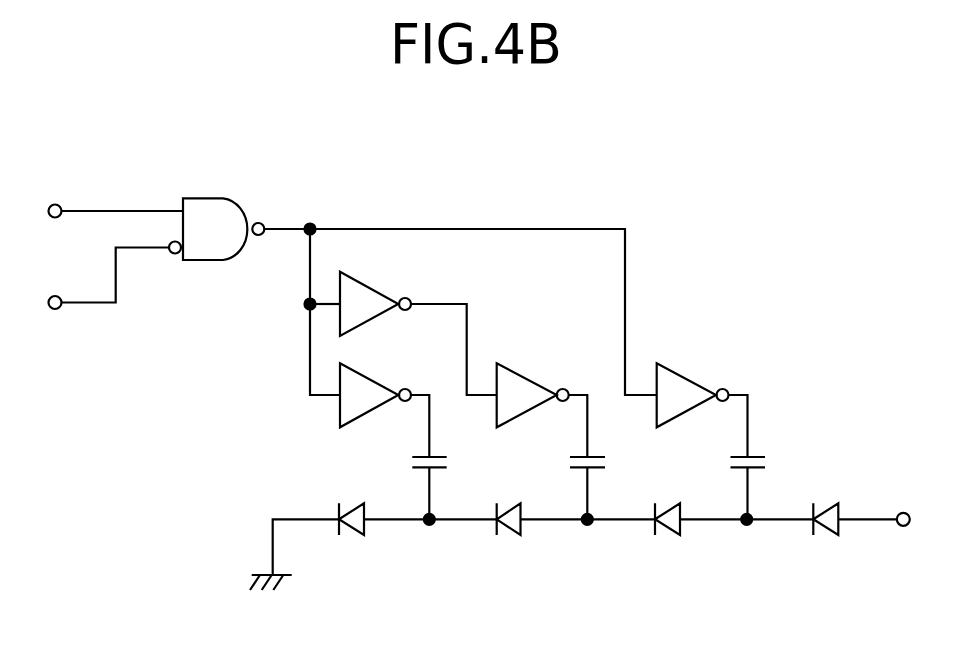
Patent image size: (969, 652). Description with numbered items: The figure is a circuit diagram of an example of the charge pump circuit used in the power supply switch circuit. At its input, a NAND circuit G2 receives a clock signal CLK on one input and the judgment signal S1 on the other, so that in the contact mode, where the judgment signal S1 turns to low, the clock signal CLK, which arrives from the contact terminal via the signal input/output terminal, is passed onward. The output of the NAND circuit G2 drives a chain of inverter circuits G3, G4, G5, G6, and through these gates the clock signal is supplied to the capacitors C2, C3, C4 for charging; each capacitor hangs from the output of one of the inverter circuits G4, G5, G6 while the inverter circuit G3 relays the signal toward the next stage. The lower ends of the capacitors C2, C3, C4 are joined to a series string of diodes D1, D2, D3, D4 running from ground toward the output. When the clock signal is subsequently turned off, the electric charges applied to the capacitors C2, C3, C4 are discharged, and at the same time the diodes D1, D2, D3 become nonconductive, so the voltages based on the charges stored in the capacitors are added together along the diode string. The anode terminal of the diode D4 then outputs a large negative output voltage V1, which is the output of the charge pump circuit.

The clock signal CLK is at (109, 195).
The judgment signal S1 is at (106, 295).
The NAND circuit G2 is at (216, 215).
The inverter circuit G3 is at (418, 322).
The inverter circuit G4 is at (384, 410).
The inverter circuit G5 is at (542, 399).
The inverter circuit G6 is at (702, 399).
The capacitor C2 is at (448, 486).
The capacitor C3 is at (606, 486).
The capacitor C4 is at (768, 486).
The diode D1 is at (383, 535).
The diode D2 is at (508, 535).
The diode D3 is at (666, 536).
The diode D4 is at (822, 536).
The output voltage V1 is at (904, 504).